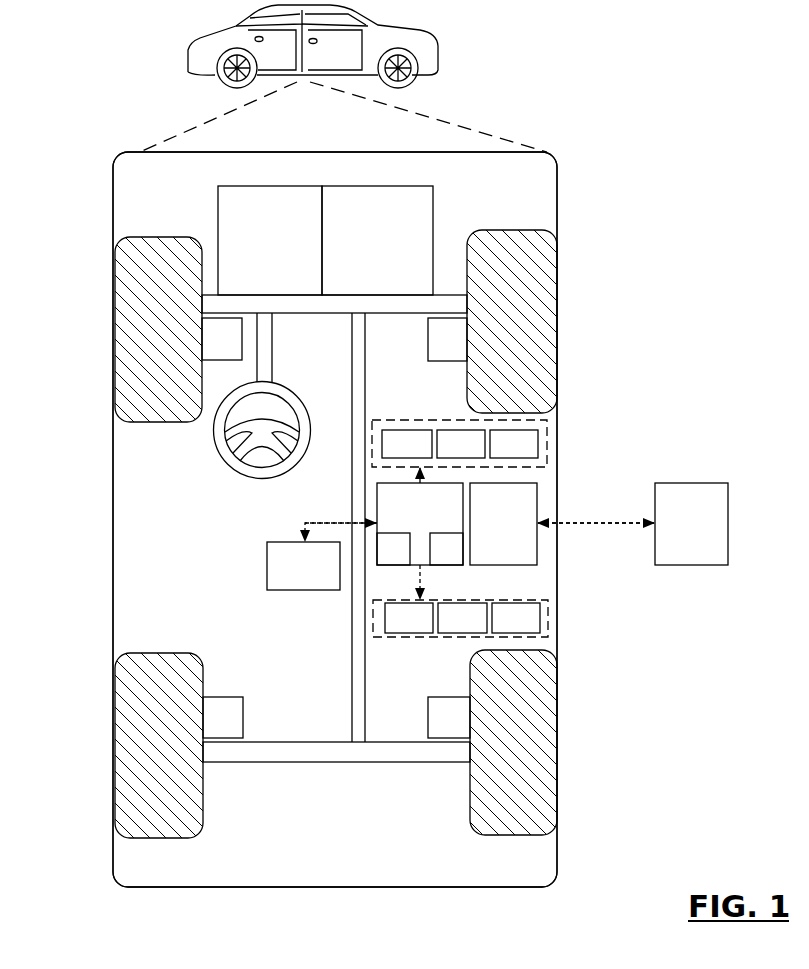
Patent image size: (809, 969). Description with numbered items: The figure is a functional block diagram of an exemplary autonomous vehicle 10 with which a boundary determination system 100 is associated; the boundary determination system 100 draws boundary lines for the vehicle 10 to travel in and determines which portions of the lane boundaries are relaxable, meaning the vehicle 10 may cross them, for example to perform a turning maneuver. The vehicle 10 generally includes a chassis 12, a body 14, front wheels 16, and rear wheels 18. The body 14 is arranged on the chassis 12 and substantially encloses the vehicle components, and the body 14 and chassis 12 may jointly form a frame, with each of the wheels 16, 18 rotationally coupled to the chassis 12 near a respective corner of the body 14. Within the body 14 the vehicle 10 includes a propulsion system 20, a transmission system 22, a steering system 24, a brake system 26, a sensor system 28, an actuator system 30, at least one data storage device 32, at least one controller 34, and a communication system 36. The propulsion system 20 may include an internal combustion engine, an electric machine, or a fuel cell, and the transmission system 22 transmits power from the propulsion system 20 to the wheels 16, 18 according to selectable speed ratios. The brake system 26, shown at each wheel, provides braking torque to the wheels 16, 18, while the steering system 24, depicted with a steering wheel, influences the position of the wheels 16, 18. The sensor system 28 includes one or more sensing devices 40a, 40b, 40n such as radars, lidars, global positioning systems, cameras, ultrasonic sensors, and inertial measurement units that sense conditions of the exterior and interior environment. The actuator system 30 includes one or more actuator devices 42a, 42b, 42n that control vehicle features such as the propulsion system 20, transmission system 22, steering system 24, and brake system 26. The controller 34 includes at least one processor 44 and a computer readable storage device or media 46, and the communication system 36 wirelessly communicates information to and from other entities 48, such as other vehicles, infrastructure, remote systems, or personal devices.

The vehicle 10 is at (190, 62).
The boundary determination system 100 is at (583, 162).
The chassis 12 is at (350, 680).
The body 14 is at (113, 505).
The front wheels 16 is at (156, 237).
The rear wheels 18 is at (175, 838).
The propulsion system 20 is at (260, 249).
The transmission system 22 is at (368, 249).
The steering system 24 is at (293, 338).
The brake system 26 is at (212, 348).
The sensor system 28 is at (392, 420).
The actuator system 30 is at (410, 637).
The data storage device 32 is at (294, 575).
The controller 34 is at (410, 531).
The communication system 36 is at (493, 532).
The sensing device 40a is at (393, 453).
The sensing device 40b is at (447, 453).
The sensing device 40n is at (500, 453).
The actuator device 42a is at (395, 627).
The actuator device 42b is at (448, 627).
The actuator device 42n is at (502, 627).
The processor 44 is at (383, 558).
The computer readable storage device or media 46 is at (436, 558).
The other entities 48 is at (681, 532).